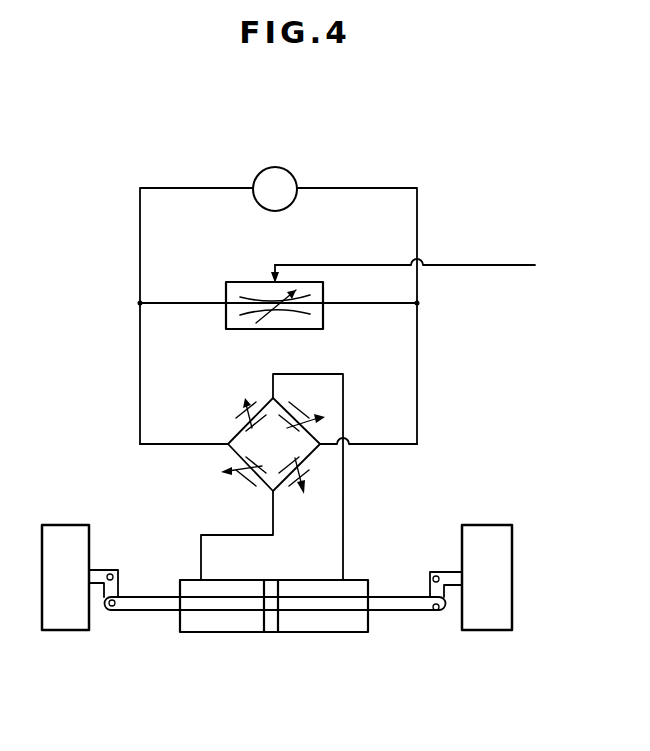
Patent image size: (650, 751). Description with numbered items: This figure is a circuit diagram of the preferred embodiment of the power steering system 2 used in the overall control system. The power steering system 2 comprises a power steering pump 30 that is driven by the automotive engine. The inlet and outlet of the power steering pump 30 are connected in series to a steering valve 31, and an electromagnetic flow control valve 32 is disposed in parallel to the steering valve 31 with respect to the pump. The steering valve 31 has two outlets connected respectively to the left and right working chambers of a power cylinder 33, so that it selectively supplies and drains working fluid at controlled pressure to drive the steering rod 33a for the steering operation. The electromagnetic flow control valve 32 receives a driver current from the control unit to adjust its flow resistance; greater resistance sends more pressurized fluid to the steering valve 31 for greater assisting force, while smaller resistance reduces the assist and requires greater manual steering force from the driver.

The power steering system 2 is at (130, 225).
The power steering pump 30 is at (296, 180).
The steering valve 31 is at (228, 414).
The electromagnetic flow control valve 32 is at (234, 282).
The power cylinder 33 is at (277, 599).
The steering rod 33a is at (333, 613).